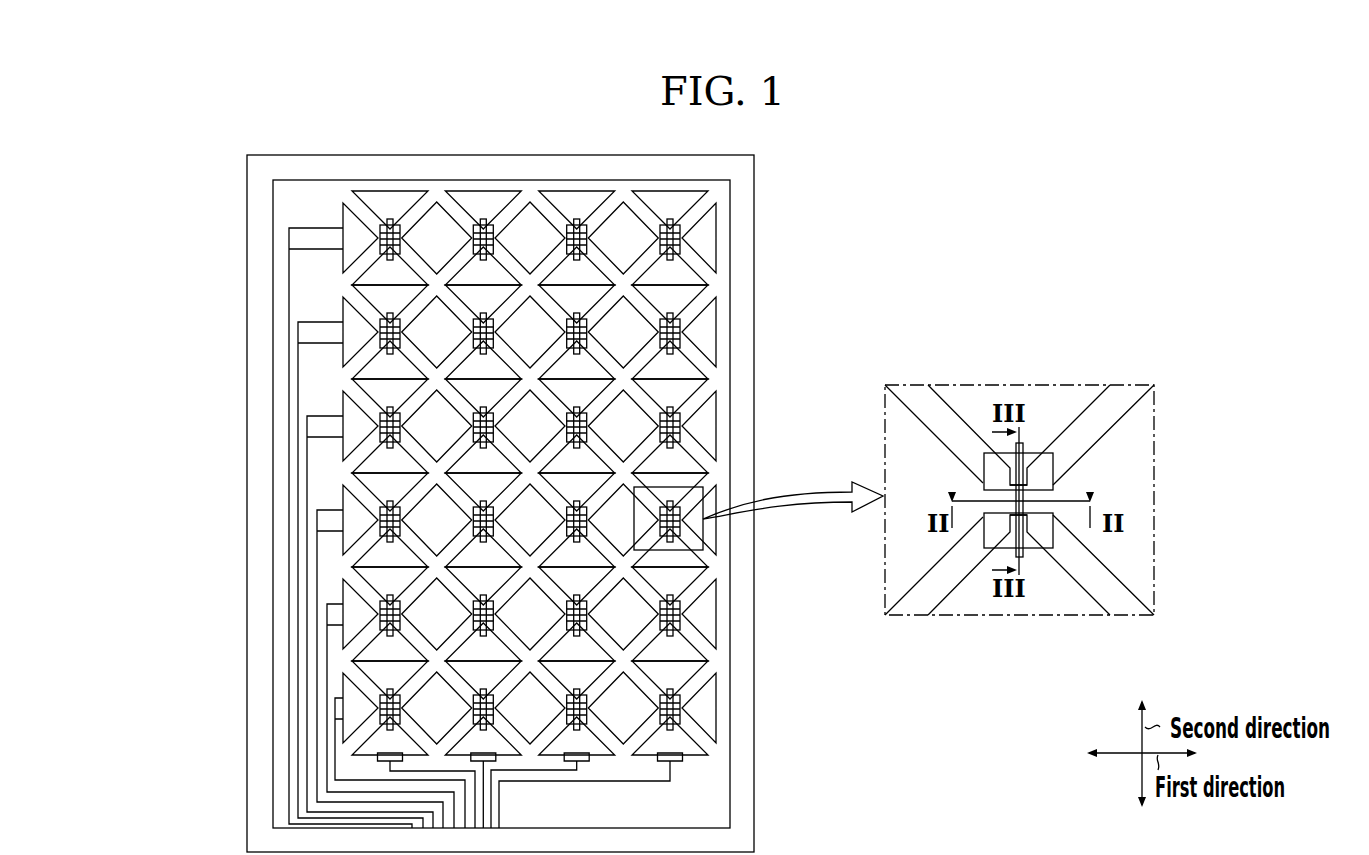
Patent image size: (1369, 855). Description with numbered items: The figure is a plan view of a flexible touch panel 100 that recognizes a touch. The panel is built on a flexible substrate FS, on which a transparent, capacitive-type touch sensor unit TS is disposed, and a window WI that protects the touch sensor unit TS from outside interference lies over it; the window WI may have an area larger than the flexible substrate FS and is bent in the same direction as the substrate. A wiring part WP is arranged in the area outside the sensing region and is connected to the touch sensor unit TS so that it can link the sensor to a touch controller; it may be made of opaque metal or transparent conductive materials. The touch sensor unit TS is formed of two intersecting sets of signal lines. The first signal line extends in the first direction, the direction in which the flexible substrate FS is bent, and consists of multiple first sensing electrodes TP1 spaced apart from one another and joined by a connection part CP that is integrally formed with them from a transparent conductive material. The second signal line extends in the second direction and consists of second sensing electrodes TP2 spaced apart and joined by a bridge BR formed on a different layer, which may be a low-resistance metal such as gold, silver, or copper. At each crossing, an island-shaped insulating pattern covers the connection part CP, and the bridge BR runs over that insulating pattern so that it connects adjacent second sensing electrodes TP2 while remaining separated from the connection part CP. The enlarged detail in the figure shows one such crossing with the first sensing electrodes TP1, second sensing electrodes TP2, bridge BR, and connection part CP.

The flexible touch panel 100 is at (607, 107).
The window WI is at (535, 175).
The flexible substrate FS is at (686, 188).
The touch sensor unit TS is at (605, 509).
The wiring part WP is at (318, 427).
The first sensing electrode TP1 is at (910, 443).
The second sensing electrode TP2 is at (1023, 408).
The bridge BR is at (1027, 477).
The connection part CP is at (1037, 522).